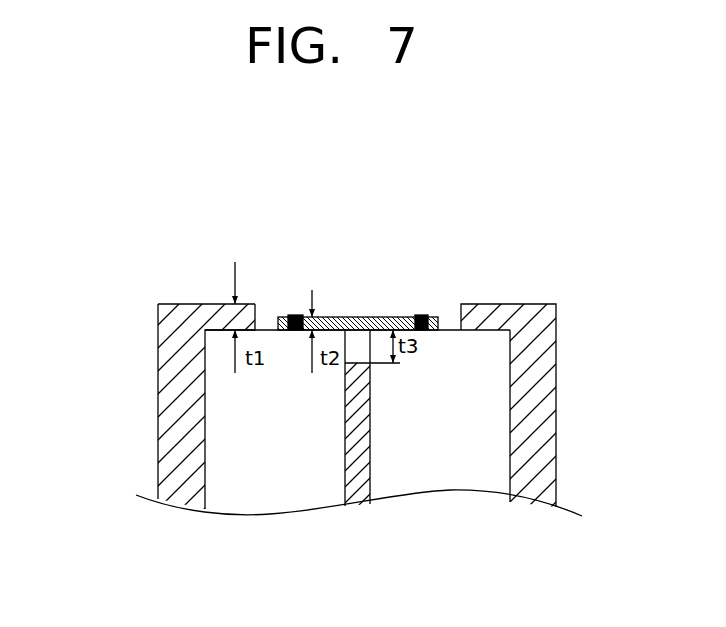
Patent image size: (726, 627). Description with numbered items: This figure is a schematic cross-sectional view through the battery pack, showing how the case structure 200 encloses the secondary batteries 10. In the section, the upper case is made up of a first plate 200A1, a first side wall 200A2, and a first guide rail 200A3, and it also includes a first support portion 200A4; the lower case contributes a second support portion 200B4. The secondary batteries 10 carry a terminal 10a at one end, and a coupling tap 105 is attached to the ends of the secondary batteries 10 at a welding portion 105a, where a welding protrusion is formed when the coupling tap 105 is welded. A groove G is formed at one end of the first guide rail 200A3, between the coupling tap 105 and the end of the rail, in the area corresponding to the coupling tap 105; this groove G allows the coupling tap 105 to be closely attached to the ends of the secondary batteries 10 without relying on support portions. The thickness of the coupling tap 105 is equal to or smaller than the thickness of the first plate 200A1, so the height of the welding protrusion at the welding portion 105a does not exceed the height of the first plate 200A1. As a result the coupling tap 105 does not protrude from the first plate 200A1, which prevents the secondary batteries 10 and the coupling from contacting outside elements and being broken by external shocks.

The secondary battery 10 is at (357, 352).
The terminal 10a is at (268, 330).
The coupling tap 105 is at (355, 288).
The welding portion 105a is at (297, 316).
The groove G is at (367, 350).
The cover structure 200 is at (371, 388).
The first plate 200A1 is at (181, 348).
The first side wall 200A2 is at (557, 403).
The first guide rail 200A3 is at (405, 459).
The first support portion 200A4 is at (236, 313).
The second support portion 200B4 is at (359, 497).